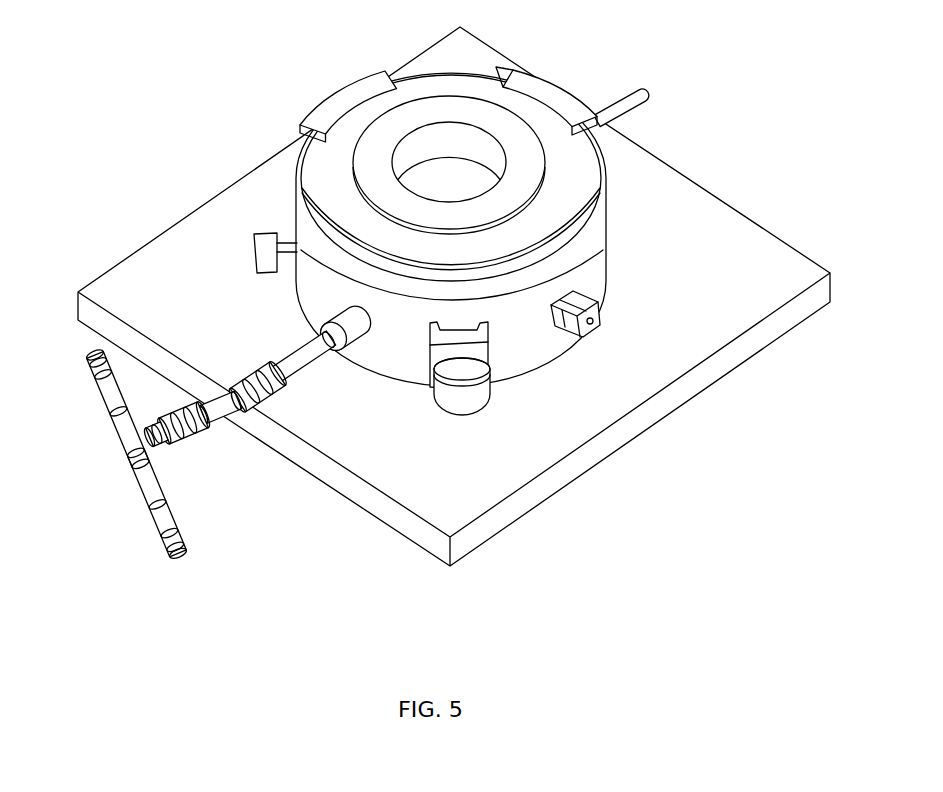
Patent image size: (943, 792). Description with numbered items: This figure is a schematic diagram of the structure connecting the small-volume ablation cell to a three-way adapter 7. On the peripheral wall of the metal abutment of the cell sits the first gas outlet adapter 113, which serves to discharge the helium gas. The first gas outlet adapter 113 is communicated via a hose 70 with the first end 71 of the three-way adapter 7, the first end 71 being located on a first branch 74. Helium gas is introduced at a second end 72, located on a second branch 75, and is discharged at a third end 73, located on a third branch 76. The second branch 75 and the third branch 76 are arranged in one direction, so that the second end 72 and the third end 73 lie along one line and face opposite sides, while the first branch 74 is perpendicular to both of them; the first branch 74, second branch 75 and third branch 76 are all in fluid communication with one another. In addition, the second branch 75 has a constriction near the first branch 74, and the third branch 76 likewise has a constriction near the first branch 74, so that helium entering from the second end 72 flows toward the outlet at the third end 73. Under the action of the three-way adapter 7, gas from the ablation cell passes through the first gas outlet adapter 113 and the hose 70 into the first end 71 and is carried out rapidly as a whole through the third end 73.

The three-way adapter 7 is at (219, 347).
The hose 70 is at (219, 322).
The first end 71 is at (173, 437).
The second end 72 is at (173, 548).
The third end 73 is at (90, 360).
The first branch 74 is at (153, 443).
The second branch 75 is at (145, 467).
The third branch 76 is at (133, 447).
The first gas outlet adapter 113 is at (297, 360).